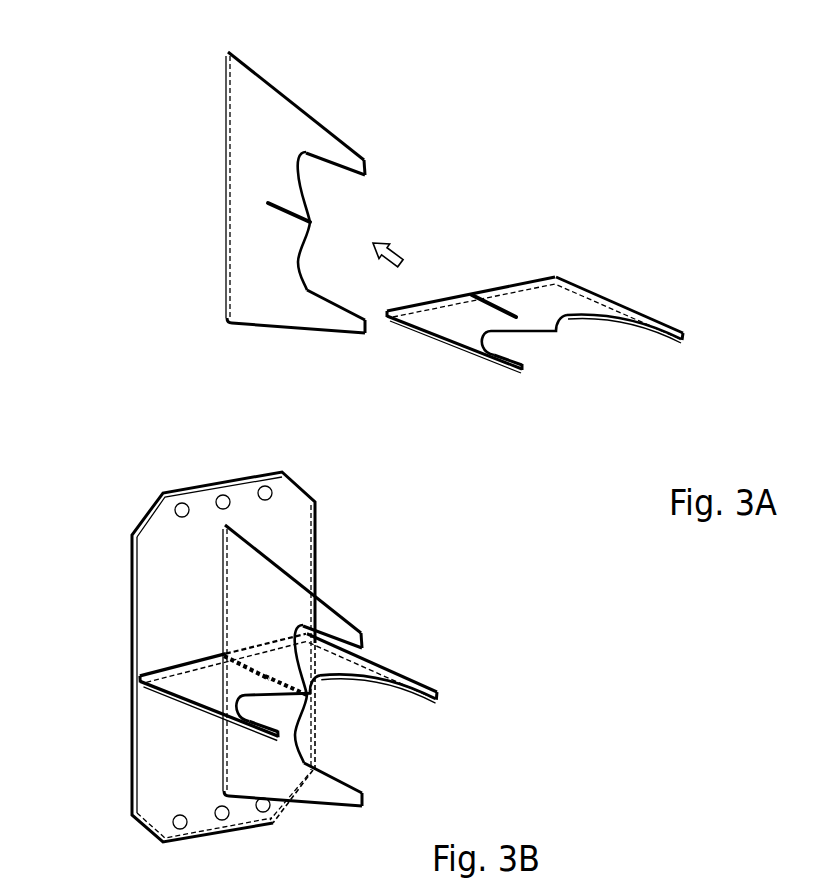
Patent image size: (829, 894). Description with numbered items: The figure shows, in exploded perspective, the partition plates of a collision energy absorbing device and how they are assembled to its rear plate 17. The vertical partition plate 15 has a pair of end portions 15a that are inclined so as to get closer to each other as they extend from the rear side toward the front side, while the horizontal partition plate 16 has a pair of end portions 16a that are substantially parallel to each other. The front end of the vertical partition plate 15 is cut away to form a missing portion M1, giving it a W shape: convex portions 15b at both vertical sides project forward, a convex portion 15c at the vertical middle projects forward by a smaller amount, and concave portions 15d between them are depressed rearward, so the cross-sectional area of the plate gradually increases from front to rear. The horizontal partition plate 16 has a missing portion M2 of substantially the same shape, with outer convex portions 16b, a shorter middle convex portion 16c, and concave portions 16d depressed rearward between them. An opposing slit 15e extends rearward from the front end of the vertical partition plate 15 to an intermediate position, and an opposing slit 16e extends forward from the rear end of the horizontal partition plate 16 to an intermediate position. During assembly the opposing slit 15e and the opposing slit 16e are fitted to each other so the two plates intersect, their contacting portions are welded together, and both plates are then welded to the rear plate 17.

In FIG. 3A, the vertical partition plate 15 is at (297, 215).
In FIG. 3B, the vertical partition plate 15 is at (327, 665).
In FIG. 3A, the end portions of the vertical partition plate 15a is at (280, 92).
In FIG. 3A, the convex portions 15b is at (368, 172).
In FIG. 3A, the convex portion 15c is at (312, 222).
In FIG. 3A, the concave portions 15d is at (300, 175).
In FIG. 3A, the opposing slit 15e is at (288, 214).
In FIG. 3B, the opposing slit 15e is at (312, 693).
In FIG. 3A, the horizontal partition plate 16 is at (572, 322).
In FIG. 3B, the horizontal partition plate 16 is at (264, 683).
In FIG. 3A, the end portions of the horizontal partition plate 16a is at (620, 300).
In FIG. 3A, the convex portions 16b is at (683, 338).
In FIG. 3A, the convex portion 16c is at (560, 340).
In FIG. 3A, the concave portions 16d is at (577, 317).
In FIG. 3A, the opposing slit 16e is at (497, 302).
In FIG. 3B, the opposing slit 16e is at (230, 662).
In FIG. 3B, the rear plate 17 is at (145, 517).
In FIG. 3A, the missing portion M1 is at (330, 188).
In FIG. 3A, the missing portion M2 is at (590, 333).